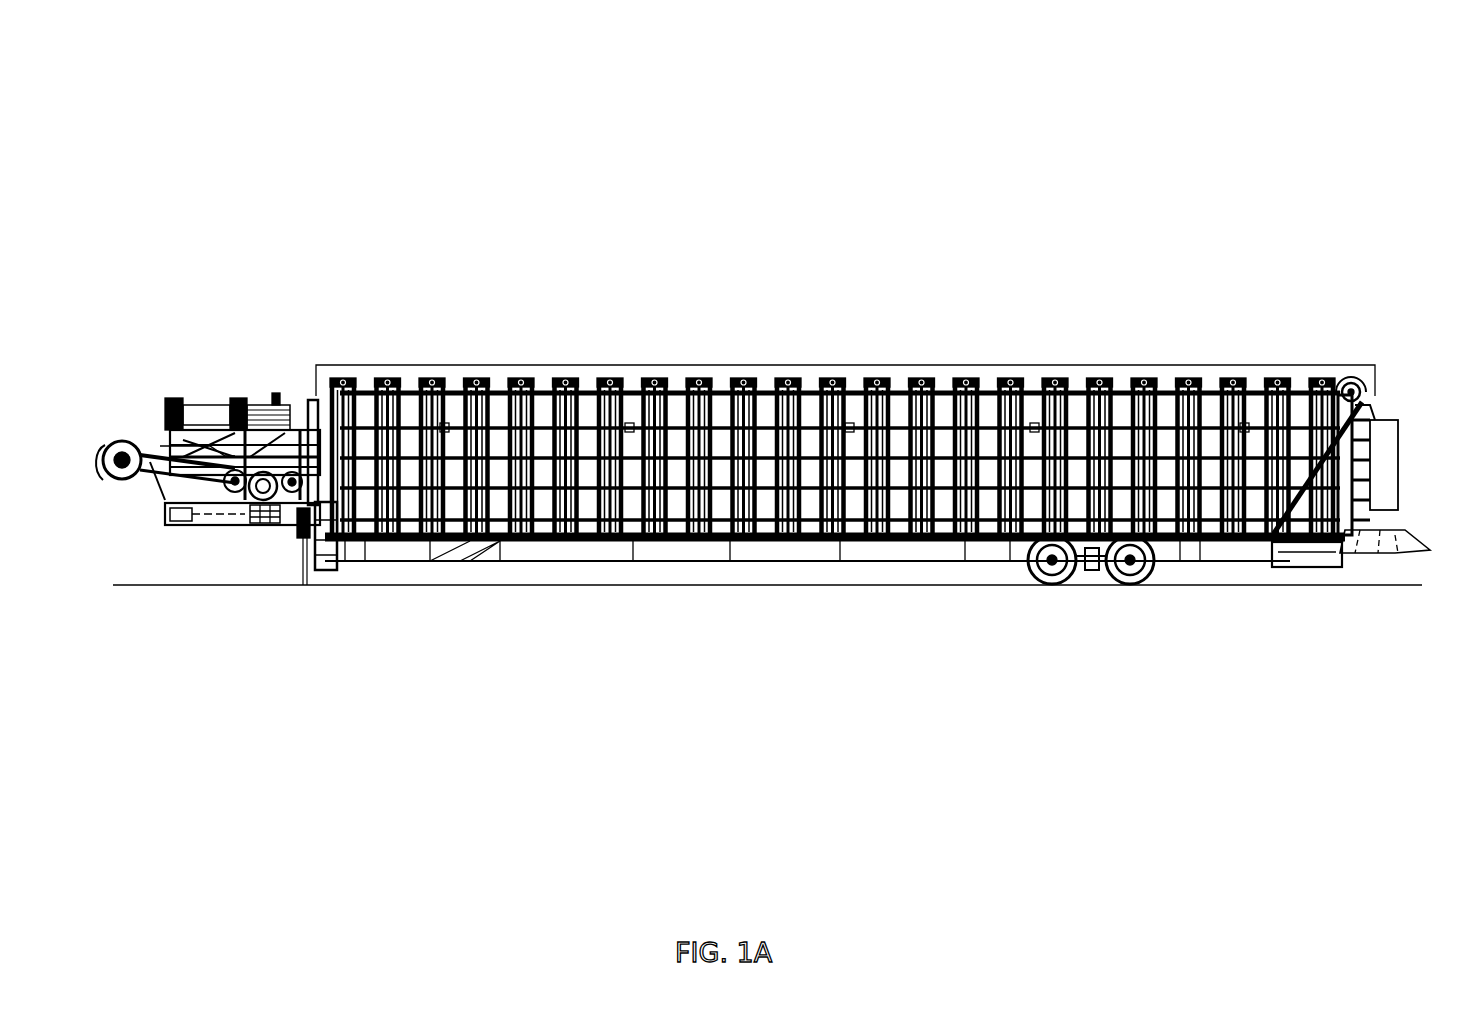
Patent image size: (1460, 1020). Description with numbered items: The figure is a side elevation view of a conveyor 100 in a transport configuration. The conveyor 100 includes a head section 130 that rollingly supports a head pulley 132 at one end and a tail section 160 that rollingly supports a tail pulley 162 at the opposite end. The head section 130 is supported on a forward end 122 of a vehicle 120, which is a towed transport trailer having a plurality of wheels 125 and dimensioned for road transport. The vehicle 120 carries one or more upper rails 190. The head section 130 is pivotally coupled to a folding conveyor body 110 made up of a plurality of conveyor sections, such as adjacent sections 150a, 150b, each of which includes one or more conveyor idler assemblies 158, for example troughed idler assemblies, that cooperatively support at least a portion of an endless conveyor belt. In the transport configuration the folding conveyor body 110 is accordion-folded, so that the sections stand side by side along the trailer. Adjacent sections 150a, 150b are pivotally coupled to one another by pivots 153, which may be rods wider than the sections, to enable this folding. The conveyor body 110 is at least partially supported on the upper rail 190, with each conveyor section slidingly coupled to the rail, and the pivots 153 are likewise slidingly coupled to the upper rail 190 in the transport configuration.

The conveyor 100 is at (1372, 170).
The folding conveyor body 110 is at (892, 322).
The vehicle 120 is at (705, 563).
The forward end 122 is at (222, 526).
The wheels 125 is at (1033, 590).
The head section 130 is at (130, 368).
The head pulley 132 is at (112, 480).
The conveyor section 150a is at (371, 392).
The conveyor section 150b is at (400, 390).
The pivots 153 is at (388, 390).
The conveyor idler assemblies 158 is at (362, 385).
The tail section 160 is at (1390, 388).
The tail pulley 162 is at (1358, 382).
The upper rails 190 is at (718, 365).